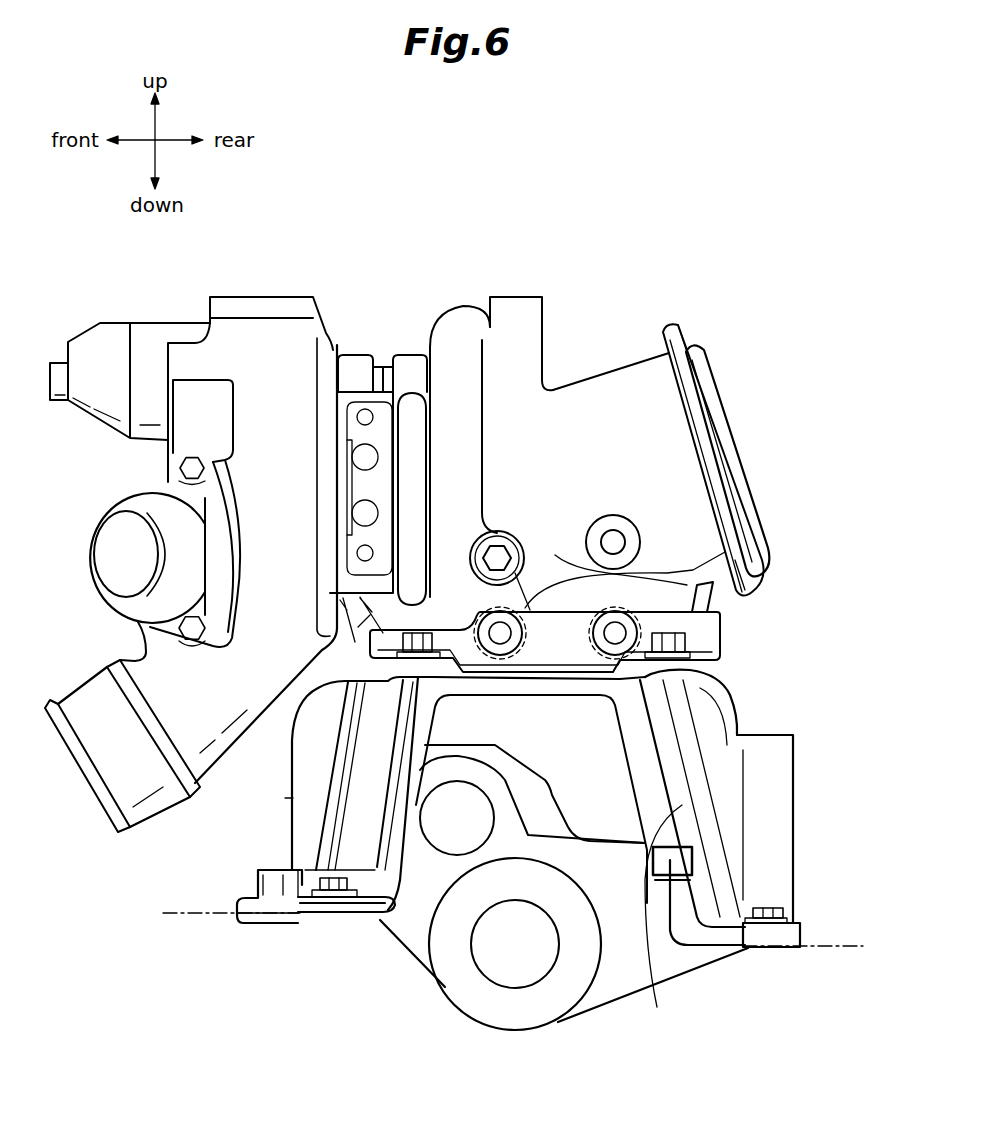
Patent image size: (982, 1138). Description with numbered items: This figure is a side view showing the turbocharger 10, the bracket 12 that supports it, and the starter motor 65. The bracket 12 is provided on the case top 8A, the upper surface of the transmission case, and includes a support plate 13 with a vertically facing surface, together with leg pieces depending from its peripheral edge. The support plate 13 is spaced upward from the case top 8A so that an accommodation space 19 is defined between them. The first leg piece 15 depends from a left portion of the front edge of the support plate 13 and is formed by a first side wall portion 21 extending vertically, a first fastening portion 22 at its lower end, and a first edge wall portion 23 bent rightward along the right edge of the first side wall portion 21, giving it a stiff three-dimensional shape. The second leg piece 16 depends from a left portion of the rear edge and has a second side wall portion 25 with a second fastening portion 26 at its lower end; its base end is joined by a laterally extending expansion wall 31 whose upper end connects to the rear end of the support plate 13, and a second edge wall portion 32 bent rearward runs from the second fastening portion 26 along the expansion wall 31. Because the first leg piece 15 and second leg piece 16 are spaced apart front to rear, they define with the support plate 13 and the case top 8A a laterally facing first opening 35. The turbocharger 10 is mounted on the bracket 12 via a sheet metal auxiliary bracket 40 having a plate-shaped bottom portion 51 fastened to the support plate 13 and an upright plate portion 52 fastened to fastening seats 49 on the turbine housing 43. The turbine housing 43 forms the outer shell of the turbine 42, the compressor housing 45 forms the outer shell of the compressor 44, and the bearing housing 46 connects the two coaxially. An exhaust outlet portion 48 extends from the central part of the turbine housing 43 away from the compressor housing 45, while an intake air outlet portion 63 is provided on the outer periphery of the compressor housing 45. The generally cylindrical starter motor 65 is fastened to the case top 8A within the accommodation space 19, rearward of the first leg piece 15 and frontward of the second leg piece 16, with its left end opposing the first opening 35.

The turbocharger 10 is at (508, 285).
The bracket 12 is at (238, 927).
The support plate 13 is at (577, 685).
The first leg piece 15 is at (281, 842).
The second leg piece 16 is at (748, 850).
The accommodation space 19 is at (518, 735).
The first side wall portion 21 is at (368, 833).
The first fastening portion 22 is at (322, 907).
The first edge wall portion 23 is at (293, 798).
The second side wall portion 25 is at (663, 922).
The second fastening portion 26 is at (773, 937).
The expansion wall 31 is at (740, 730).
The second edge wall portion 32 is at (788, 767).
The first opening 35 is at (632, 787).
The auxiliary bracket 40 is at (725, 648).
The turbine 42 is at (590, 370).
The turbine housing 43 is at (525, 302).
The compressor 44 is at (270, 293).
The compressor housing 45 is at (230, 298).
The bearing housing 46 is at (383, 377).
The exhaust outlet portion 48 is at (722, 433).
The fastening seats 49 is at (723, 557).
The bottom portion 51 is at (492, 668).
The upright plate portion 52 is at (705, 625).
The intake air outlet portion 63 is at (147, 807).
The starter motor 65 is at (573, 987).
The case top 8A is at (832, 942).